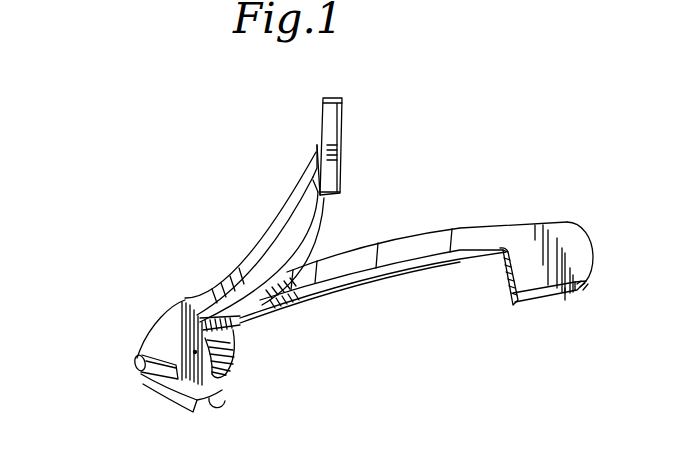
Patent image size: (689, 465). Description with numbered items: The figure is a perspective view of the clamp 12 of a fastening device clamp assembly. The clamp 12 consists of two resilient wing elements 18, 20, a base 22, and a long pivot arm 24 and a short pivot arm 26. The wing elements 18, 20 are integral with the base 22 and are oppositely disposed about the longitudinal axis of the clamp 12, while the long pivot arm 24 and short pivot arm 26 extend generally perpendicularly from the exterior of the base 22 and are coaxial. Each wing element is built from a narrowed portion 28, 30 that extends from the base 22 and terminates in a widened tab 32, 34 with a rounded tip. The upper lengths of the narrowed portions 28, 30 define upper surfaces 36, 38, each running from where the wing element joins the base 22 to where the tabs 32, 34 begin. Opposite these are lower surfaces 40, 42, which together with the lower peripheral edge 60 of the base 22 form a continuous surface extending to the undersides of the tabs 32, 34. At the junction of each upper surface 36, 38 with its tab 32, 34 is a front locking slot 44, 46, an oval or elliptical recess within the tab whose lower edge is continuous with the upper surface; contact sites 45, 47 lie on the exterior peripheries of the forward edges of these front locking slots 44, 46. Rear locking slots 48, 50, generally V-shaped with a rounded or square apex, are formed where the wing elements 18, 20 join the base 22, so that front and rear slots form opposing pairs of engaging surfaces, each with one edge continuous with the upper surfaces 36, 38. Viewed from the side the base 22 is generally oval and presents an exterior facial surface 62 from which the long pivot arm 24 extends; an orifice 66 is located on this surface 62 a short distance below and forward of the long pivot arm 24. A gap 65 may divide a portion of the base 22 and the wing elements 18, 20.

The clamp 12 is at (192, 207).
The wing element 18 is at (266, 219).
The wing element 20 is at (478, 229).
The base 22 is at (131, 348).
The long pivot arm 24 is at (138, 375).
The short pivot arm 26 is at (218, 406).
The narrowed portion 28 is at (262, 254).
The narrowed portion 30 is at (340, 263).
The tab 32 is at (316, 155).
The tab 34 is at (580, 262).
The upper surface 36 is at (318, 222).
The upper surface 38 is at (418, 263).
The lower surface 40 is at (226, 273).
The lower surface 42 is at (421, 234).
The front locking slot 44 is at (313, 165).
The contact site 45 is at (310, 183).
The front locking slot 46 is at (500, 254).
The contact site 47 is at (506, 272).
The rear locking slot 48 is at (190, 300).
The rear locking slot 50 is at (231, 334).
The lower peripheral edge 60 is at (153, 322).
The exterior facial surface 62 is at (173, 347).
The gap 65 is at (232, 378).
The orifice 66 is at (236, 366).